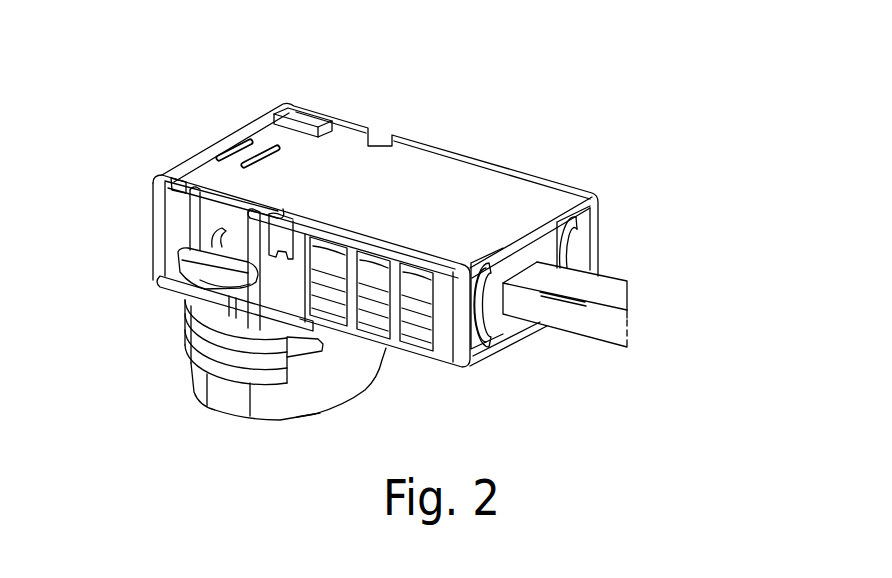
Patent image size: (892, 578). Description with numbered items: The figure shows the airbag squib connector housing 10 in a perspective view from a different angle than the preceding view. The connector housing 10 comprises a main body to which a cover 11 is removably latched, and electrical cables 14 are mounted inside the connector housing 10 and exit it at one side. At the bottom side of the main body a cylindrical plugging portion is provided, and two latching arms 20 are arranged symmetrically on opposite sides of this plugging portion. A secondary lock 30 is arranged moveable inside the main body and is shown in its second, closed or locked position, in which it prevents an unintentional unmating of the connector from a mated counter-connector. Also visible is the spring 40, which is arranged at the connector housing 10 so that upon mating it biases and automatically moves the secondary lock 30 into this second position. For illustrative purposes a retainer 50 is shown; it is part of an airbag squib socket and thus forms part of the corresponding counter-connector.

The connector housing 10 is at (404, 264).
The cover 11 is at (413, 163).
The electrical cables 14 is at (605, 293).
The latching arms 20 is at (193, 352).
The secondary lock 30 is at (157, 284).
The spring 40 is at (498, 305).
The retainer 50 is at (237, 402).